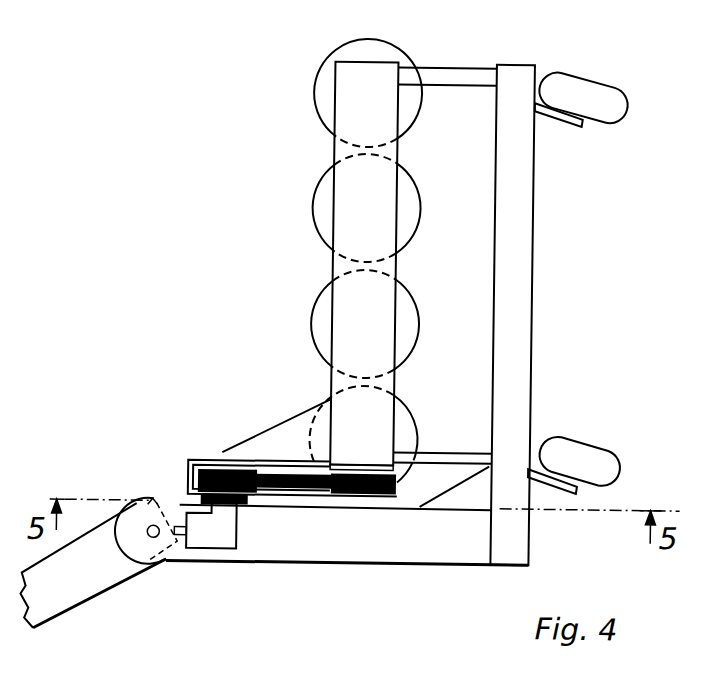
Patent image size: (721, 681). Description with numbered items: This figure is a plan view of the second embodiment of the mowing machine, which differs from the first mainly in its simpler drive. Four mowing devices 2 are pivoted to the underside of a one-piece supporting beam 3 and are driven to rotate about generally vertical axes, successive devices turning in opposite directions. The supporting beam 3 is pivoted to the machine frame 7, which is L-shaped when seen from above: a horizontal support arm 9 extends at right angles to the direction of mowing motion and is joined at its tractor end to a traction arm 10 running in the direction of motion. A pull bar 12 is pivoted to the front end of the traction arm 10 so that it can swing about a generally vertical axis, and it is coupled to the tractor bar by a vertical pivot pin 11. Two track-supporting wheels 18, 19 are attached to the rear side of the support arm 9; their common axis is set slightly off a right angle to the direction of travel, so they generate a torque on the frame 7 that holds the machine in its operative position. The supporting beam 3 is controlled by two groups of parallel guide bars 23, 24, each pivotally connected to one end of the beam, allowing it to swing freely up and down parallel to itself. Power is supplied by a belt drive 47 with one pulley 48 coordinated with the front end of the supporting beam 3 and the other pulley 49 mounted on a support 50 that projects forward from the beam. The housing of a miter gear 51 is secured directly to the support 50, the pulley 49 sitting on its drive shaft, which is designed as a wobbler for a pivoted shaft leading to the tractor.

The mowing devices 2 is at (310, 106).
The supporting beam 3 is at (394, 380).
The machine frame 7 is at (530, 405).
The support arm 9 is at (518, 261).
The traction arm 10 is at (459, 552).
The vertical pivot pin 11 is at (152, 528).
The pull bar 12 is at (74, 599).
The track-supporting wheel 18 is at (612, 104).
The track-supporting wheel 19 is at (613, 463).
The group of parallel guide bars 23 is at (427, 72).
The group of parallel guide bars 24 is at (452, 459).
The belt drive 47 is at (313, 493).
The pulley 48 is at (370, 495).
The pulley 49 is at (238, 476).
The support 50 is at (282, 463).
The miter gear 51 is at (201, 542).